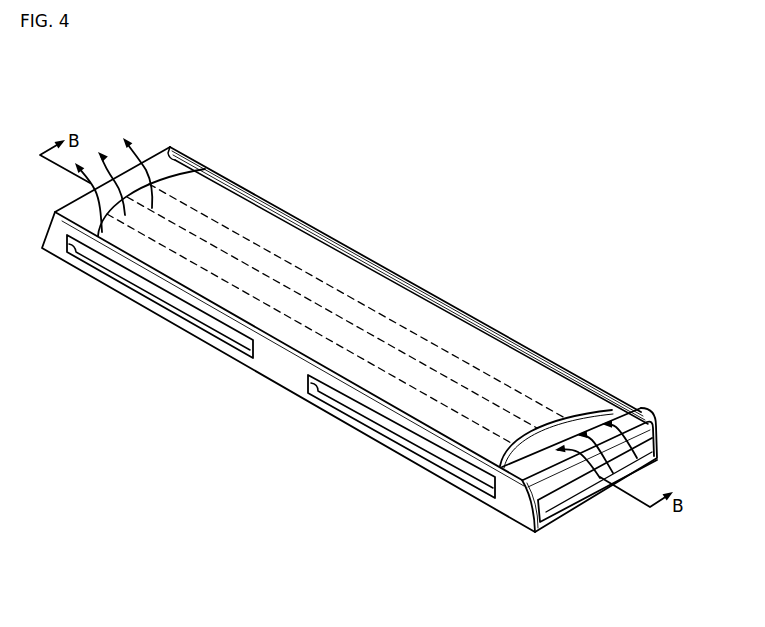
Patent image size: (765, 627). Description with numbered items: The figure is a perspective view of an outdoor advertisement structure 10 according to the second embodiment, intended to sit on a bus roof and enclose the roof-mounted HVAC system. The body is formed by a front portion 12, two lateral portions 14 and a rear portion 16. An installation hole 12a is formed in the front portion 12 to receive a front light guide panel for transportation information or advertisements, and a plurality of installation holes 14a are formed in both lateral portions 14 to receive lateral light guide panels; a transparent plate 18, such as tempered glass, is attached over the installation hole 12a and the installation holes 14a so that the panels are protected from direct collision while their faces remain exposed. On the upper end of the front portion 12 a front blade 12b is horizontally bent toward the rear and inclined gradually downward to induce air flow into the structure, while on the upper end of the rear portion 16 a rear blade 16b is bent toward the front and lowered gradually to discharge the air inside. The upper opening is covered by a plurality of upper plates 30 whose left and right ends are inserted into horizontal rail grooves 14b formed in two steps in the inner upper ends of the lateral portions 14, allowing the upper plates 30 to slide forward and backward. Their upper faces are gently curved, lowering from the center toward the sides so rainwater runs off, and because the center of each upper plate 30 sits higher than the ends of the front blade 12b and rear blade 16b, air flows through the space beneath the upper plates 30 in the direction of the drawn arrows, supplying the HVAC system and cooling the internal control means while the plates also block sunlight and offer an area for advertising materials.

The advertisement structure 10 is at (181, 118).
The front portion 12 is at (562, 513).
The installation hole 12a is at (652, 471).
The front blade 12b is at (613, 416).
The lateral portions 14 is at (373, 258).
The installation holes 14a is at (72, 252).
The horizontal rail grooves 14b is at (459, 306).
The rear portion 16 is at (157, 172).
The rear blade 16b is at (182, 170).
The transparent plate 18 is at (182, 307).
The upper plates 30 is at (268, 233).